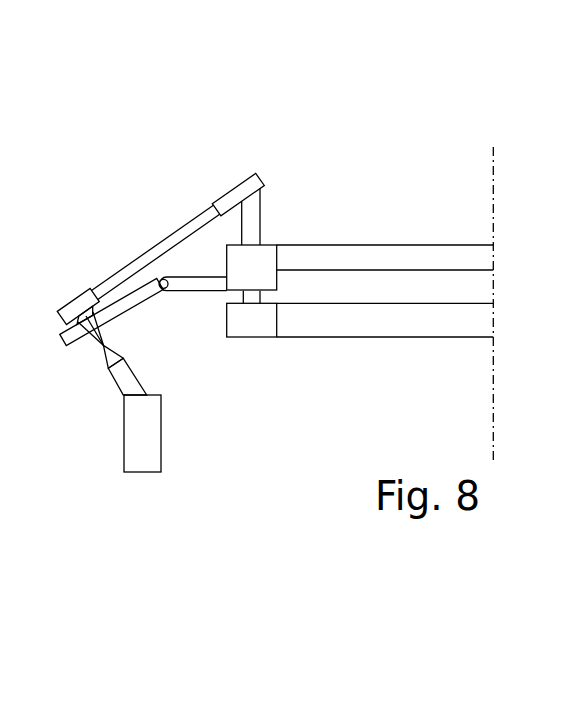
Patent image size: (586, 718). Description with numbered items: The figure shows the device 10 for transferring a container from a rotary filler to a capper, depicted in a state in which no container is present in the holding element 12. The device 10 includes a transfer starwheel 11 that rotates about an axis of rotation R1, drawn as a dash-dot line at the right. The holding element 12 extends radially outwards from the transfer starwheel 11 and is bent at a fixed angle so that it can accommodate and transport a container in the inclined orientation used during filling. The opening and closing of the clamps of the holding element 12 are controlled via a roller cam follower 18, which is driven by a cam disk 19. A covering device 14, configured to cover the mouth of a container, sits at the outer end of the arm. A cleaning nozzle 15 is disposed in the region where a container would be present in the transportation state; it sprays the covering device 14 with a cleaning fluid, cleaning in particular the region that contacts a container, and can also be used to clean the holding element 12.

The device 10 is at (342, 100).
The axis of rotation R1 is at (487, 288).
The transfer starwheel 11 is at (363, 253).
The holding element 12 is at (182, 283).
The covering device 14 is at (83, 300).
The cleaning nozzle 15 is at (125, 380).
The roller cam follower 18 is at (257, 320).
The cam disk 19 is at (383, 325).